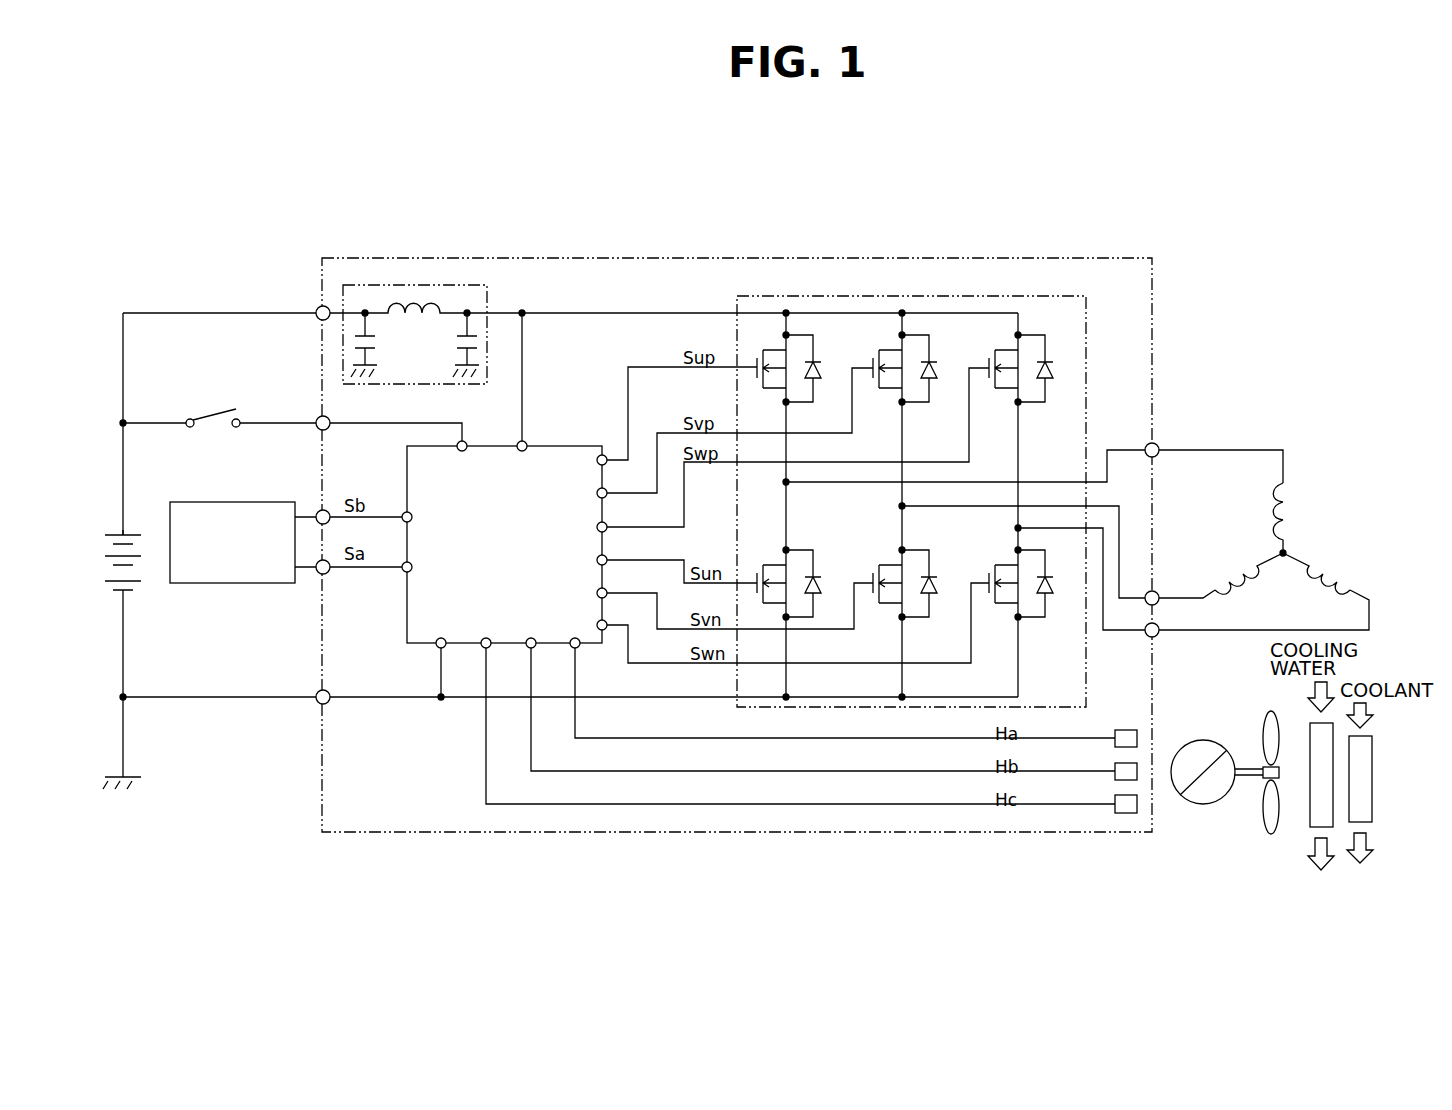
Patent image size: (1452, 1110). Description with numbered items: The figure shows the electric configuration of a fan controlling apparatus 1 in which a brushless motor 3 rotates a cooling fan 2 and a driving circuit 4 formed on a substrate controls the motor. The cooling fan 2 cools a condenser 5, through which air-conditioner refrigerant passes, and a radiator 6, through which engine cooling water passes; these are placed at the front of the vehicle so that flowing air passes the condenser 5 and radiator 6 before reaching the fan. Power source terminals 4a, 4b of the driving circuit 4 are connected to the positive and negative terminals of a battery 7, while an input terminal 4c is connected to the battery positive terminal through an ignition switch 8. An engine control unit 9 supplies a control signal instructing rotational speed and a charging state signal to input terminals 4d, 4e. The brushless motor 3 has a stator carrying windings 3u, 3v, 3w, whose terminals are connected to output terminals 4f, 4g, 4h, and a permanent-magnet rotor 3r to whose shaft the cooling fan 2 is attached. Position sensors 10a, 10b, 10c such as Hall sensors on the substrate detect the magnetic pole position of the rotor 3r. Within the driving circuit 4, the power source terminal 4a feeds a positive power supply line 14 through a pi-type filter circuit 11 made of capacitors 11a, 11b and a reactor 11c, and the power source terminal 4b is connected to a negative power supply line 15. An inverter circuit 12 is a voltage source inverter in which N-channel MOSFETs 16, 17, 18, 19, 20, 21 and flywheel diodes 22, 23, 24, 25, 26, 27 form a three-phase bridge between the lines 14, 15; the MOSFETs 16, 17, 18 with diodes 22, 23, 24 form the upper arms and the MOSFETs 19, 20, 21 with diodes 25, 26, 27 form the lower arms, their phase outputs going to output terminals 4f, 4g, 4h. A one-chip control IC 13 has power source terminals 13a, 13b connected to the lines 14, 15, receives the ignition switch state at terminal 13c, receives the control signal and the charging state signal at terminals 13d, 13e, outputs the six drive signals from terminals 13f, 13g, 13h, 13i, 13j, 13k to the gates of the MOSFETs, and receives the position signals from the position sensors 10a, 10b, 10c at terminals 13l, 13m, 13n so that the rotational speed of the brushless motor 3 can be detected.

The fan controlling apparatus 1 is at (850, 238).
The cooling fan 2 is at (1270, 840).
The brushless motor 3 is at (1271, 559).
The rotor 3r is at (1215, 745).
The winding 3u is at (1298, 505).
The winding 3v is at (1245, 580).
The winding 3w is at (1330, 577).
The driving circuit 4 is at (747, 256).
The power source terminal 4a is at (318, 308).
The power source terminal 4b is at (318, 705).
The input terminal 4c is at (318, 418).
The input terminal 4d is at (318, 575).
The input terminal 4e is at (318, 510).
The output terminal 4f is at (1158, 443).
The output terminal 4g is at (1158, 592).
The output terminal 4h is at (1155, 640).
The condenser 5 is at (1376, 762).
The radiator 6 is at (1335, 800).
The battery 7 is at (128, 528).
The ignition switch 8 is at (208, 405).
The engine control unit 9 is at (232, 500).
The position sensor 10a is at (1128, 730).
The position sensor 10b is at (1115, 785).
The position sensor 10c is at (1128, 815).
The filter circuit 11 is at (490, 303).
The capacitor 11a is at (382, 340).
The capacitor 11b is at (455, 352).
The reactor 11c is at (405, 300).
The inverter circuit 12 is at (920, 295).
The IC 13 is at (590, 445).
The terminal 13a is at (530, 440).
The terminal 13b is at (438, 650).
The terminal 13c is at (455, 444).
The terminal 13d is at (400, 572).
The terminal 13e is at (400, 512).
The terminal 13f is at (610, 458).
The terminal 13g is at (608, 493).
The terminal 13h is at (608, 527).
The terminal 13i is at (608, 560).
The terminal 13j is at (608, 593).
The terminal 13k is at (608, 625).
The terminal 13l is at (578, 650).
The terminal 13m is at (535, 650).
The terminal 13n is at (490, 650).
The positive power supply line 14 is at (641, 313).
The negative power supply line 15 is at (380, 700).
The MOSFET 16 is at (761, 358).
The MOSFET 17 is at (872, 358).
The MOSFET 18 is at (988, 358).
The MOSFET 19 is at (762, 570).
The MOSFET 20 is at (874, 570).
The MOSFET 21 is at (988, 570).
The flywheel diode 22 is at (813, 360).
The flywheel diode 23 is at (930, 360).
The flywheel diode 24 is at (1046, 360).
The flywheel diode 25 is at (818, 576).
The flywheel diode 26 is at (933, 576).
The flywheel diode 27 is at (1048, 576).